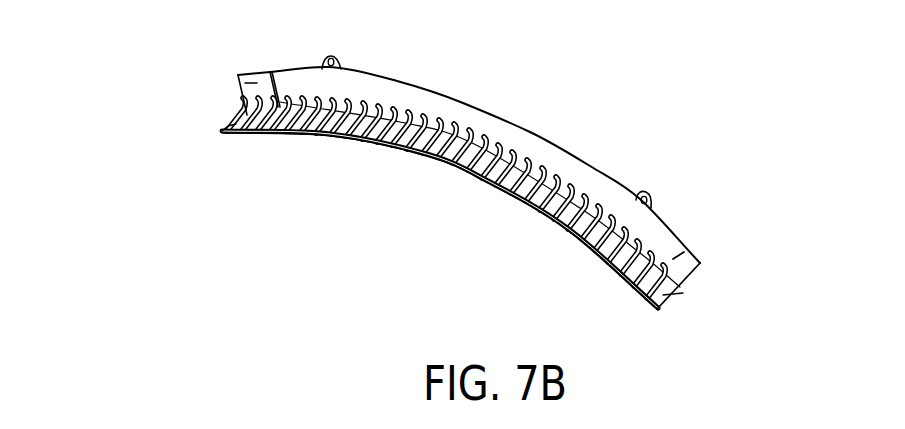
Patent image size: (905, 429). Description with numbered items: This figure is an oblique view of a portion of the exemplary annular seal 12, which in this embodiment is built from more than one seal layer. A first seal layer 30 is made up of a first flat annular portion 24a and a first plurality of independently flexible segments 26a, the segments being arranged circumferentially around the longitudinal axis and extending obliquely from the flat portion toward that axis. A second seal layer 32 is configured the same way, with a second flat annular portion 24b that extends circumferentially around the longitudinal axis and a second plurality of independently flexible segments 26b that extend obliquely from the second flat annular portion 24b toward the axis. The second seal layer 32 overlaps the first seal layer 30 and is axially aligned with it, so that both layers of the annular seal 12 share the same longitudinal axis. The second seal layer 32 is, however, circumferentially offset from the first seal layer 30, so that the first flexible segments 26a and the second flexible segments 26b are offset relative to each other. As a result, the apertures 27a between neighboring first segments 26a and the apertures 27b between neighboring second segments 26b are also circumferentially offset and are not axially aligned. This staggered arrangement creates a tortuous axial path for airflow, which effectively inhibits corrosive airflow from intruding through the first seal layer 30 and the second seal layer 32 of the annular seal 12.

The annular seal 12 is at (461, 183).
The first flat annular portion 24a is at (241, 83).
The first plurality of independently flexible segments 26a is at (236, 124).
The first seal layer 30 is at (178, 97).
The apertures 27a is at (519, 202).
The apertures 27b is at (548, 220).
The second flat annular portion 24b is at (684, 252).
The second plurality of independently flexible segments 26b is at (683, 293).
The second seal layer 32 is at (749, 287).